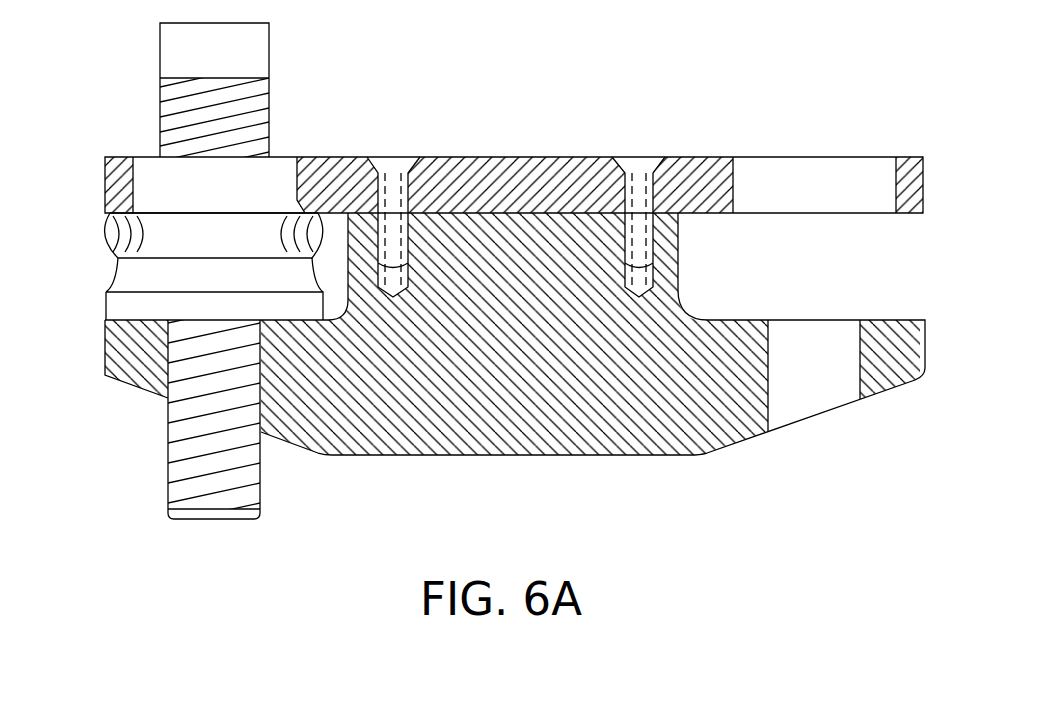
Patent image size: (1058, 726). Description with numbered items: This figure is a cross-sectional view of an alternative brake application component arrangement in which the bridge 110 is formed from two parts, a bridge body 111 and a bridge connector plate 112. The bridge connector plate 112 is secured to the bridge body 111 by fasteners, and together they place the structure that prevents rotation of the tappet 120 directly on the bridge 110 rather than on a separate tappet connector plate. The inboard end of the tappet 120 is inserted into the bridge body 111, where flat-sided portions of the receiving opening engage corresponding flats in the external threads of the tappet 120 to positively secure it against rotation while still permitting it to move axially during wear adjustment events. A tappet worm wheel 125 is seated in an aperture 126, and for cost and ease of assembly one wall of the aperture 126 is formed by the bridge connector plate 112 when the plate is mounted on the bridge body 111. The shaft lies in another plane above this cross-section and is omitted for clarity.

The bridge 110 is at (654, 87).
The bridge body 111 is at (510, 441).
The bridge connector plate 112 is at (507, 158).
The tappet 120 is at (158, 110).
The tappet worm wheel 125 is at (110, 248).
The aperture 126 is at (337, 225).